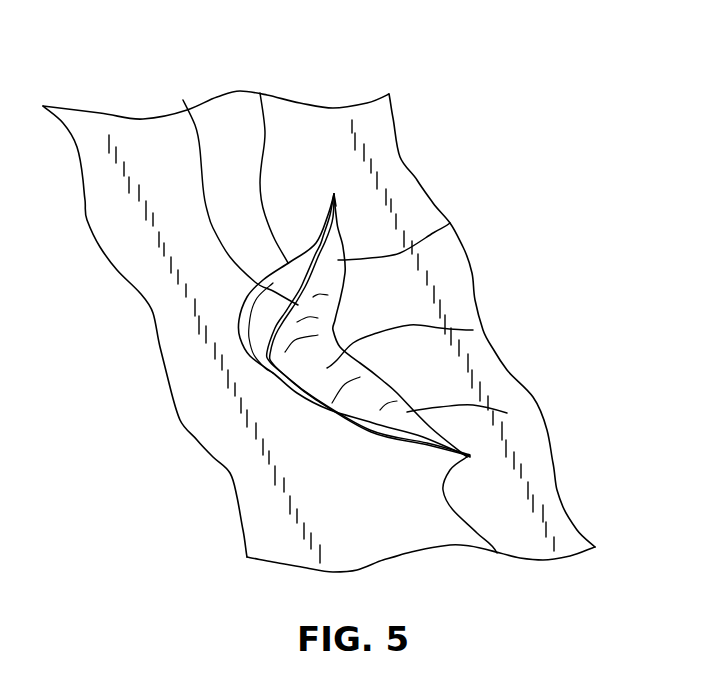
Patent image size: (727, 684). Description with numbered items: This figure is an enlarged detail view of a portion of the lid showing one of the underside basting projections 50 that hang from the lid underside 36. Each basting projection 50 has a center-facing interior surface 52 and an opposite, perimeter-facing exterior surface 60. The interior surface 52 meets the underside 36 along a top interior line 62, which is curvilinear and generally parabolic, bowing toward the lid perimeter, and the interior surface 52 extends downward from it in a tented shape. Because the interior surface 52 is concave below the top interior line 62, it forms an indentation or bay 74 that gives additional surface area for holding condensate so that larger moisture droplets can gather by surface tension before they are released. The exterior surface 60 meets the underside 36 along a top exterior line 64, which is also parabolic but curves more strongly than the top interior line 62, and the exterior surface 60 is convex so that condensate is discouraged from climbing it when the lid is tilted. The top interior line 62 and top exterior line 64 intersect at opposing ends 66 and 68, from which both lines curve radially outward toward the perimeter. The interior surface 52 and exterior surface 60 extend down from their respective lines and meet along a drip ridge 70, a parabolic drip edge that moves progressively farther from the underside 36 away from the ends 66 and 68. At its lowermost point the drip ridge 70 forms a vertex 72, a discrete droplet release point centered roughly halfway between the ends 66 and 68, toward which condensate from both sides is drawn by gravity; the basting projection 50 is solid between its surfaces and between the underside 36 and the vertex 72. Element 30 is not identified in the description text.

The textile panel 30 is at (262, 495).
The underside 36 is at (243, 460).
The basting projection 50 is at (507, 413).
The interior surface 52 is at (450, 223).
The exterior surface 60 is at (265, 313).
The top interior line 62 is at (363, 360).
The top exterior line 64 is at (260, 93).
The opposing end 66 is at (336, 199).
The opposing end 68 is at (497, 553).
The drip ridge 70 is at (183, 100).
The vertex 72 is at (262, 365).
The bay 74 is at (473, 330).